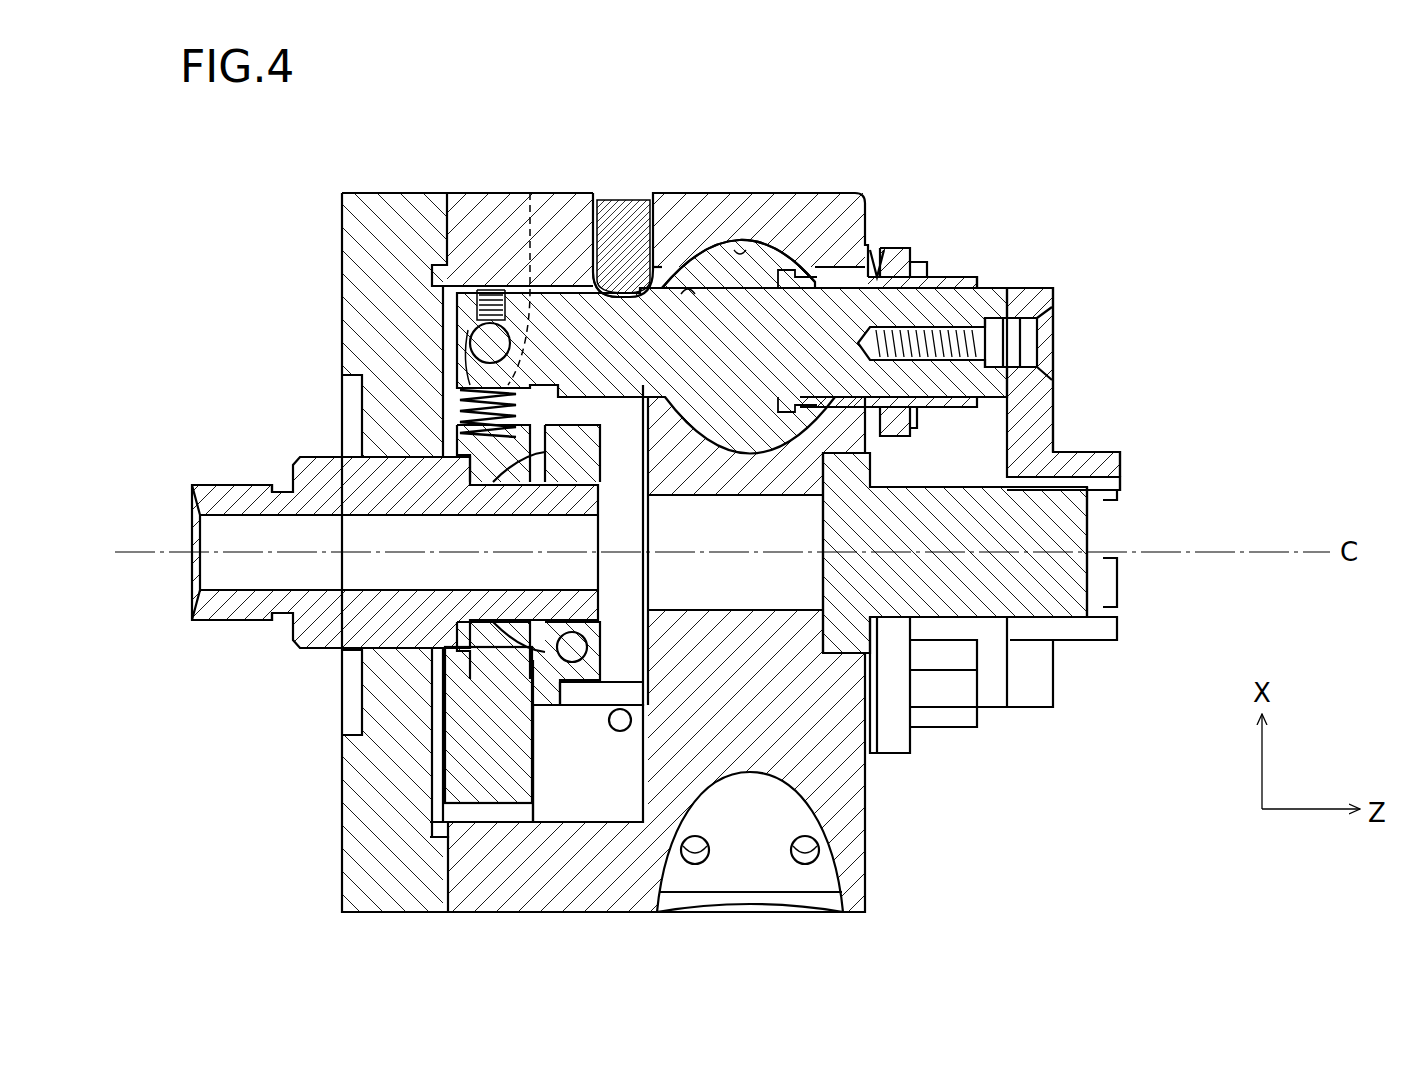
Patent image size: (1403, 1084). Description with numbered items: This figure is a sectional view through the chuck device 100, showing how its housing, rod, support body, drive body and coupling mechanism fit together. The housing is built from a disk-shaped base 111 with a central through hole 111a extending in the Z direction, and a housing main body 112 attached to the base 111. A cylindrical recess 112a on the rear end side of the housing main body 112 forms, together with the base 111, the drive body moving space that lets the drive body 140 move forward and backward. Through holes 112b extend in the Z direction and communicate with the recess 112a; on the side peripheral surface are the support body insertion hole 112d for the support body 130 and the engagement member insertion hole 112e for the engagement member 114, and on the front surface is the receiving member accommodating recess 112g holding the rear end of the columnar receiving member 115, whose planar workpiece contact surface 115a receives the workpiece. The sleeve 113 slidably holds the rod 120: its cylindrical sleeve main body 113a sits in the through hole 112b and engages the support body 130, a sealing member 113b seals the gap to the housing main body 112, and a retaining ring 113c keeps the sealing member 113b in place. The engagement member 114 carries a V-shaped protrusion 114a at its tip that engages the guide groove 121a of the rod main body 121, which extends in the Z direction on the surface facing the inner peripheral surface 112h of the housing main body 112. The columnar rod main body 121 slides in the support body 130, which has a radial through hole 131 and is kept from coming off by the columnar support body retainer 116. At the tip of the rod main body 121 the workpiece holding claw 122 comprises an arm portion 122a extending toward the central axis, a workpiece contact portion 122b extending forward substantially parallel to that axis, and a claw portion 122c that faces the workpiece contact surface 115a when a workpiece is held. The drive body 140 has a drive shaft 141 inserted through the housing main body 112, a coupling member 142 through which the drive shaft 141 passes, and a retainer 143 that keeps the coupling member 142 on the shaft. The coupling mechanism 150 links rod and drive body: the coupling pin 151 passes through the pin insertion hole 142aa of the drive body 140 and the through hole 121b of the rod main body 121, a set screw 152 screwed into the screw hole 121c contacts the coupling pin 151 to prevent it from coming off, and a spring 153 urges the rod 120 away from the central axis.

The chuck device 100 is at (1120, 208).
The base 111 is at (368, 200).
The through hole 111a is at (388, 464).
The housing main body 112 is at (603, 880).
The recess 112a is at (605, 796).
The through hole 112b is at (680, 432).
The support body insertion hole 112d is at (755, 240).
The engagement member insertion hole 112e is at (653, 245).
The receiving member accommodating recess 112g is at (828, 624).
The inner peripheral surface 112h is at (525, 815).
The sleeve 113 is at (993, 208).
The sleeve main body 113a is at (940, 280).
The sealing member 113b is at (888, 262).
The retaining ring 113c is at (915, 270).
The engagement member 114 is at (612, 220).
The V-shaped protrusion 114a is at (680, 250).
The receiving member 115 is at (1092, 577).
The workpiece contact surface 115a is at (1090, 530).
The support body retainer 116 is at (752, 880).
The rod 120 is at (1183, 275).
The rod main body 121 is at (998, 293).
The guide groove 121a is at (593, 250).
The through hole 121b is at (505, 290).
The screw hole 121c is at (470, 293).
The workpiece holding claw 122 is at (1205, 375).
The arm portion 122a is at (1047, 403).
The workpiece contact portion 122b is at (1085, 457).
The claw portion 122c is at (1115, 482).
The support body 130 is at (800, 283).
The through hole 131 is at (715, 235).
The drive body 140 is at (225, 700).
The drive shaft 141 is at (258, 620).
The coupling member 142 is at (468, 772).
The pin insertion hole 142aa is at (530, 193).
The retainer 143 is at (520, 645).
The coupling mechanism 150 is at (242, 292).
The coupling pin 151 is at (483, 345).
The set screw 152 is at (478, 298).
The spring 153 is at (465, 402).